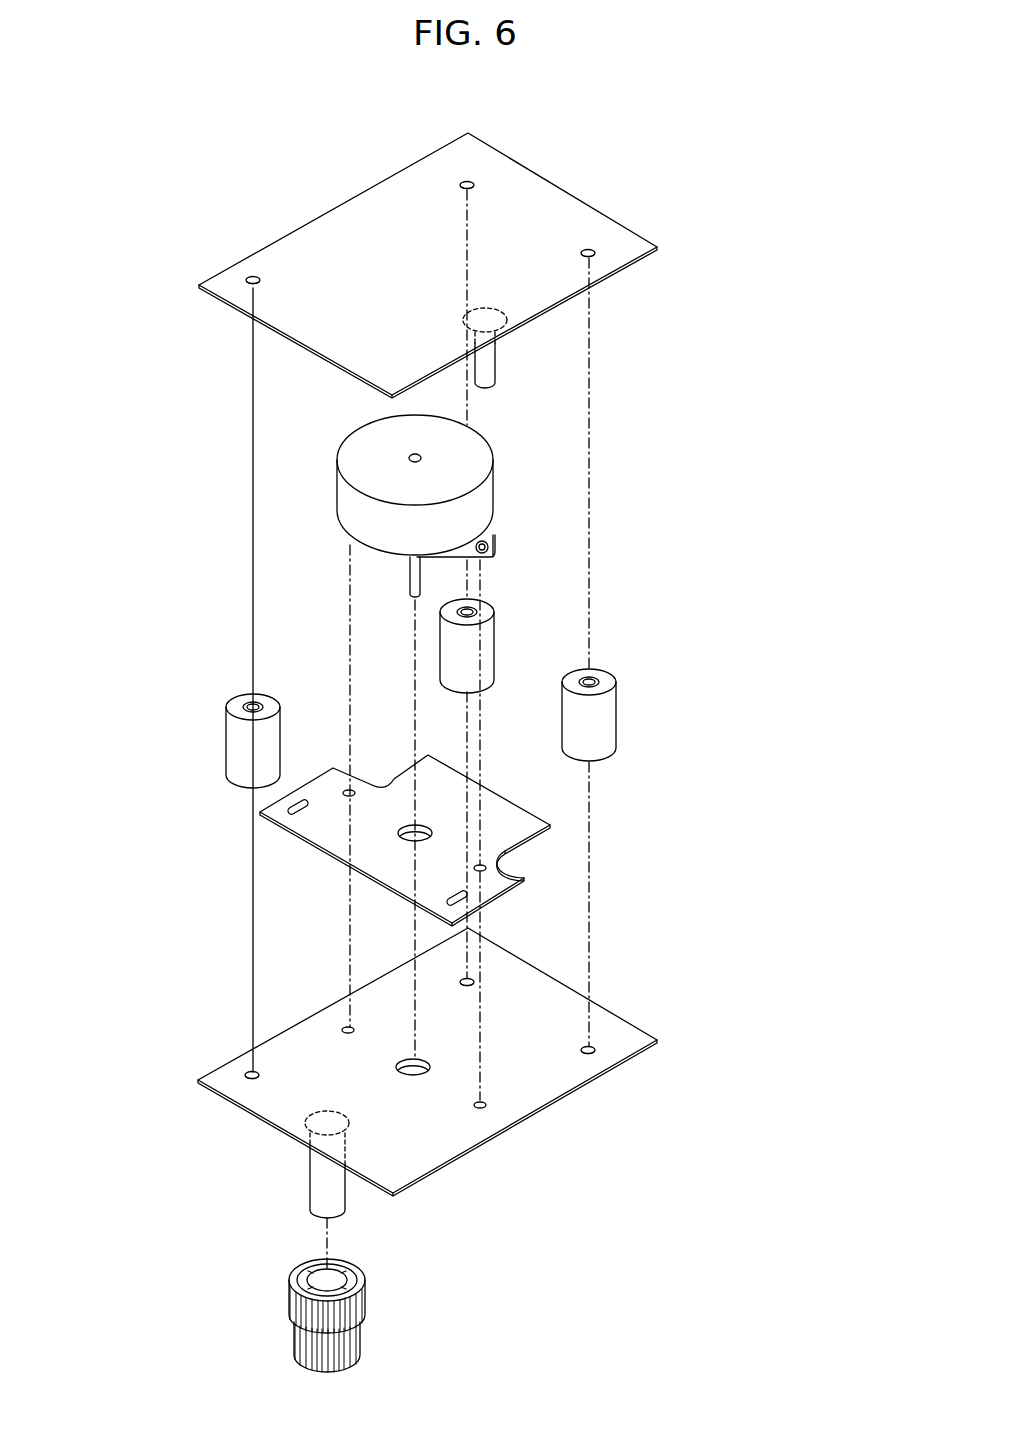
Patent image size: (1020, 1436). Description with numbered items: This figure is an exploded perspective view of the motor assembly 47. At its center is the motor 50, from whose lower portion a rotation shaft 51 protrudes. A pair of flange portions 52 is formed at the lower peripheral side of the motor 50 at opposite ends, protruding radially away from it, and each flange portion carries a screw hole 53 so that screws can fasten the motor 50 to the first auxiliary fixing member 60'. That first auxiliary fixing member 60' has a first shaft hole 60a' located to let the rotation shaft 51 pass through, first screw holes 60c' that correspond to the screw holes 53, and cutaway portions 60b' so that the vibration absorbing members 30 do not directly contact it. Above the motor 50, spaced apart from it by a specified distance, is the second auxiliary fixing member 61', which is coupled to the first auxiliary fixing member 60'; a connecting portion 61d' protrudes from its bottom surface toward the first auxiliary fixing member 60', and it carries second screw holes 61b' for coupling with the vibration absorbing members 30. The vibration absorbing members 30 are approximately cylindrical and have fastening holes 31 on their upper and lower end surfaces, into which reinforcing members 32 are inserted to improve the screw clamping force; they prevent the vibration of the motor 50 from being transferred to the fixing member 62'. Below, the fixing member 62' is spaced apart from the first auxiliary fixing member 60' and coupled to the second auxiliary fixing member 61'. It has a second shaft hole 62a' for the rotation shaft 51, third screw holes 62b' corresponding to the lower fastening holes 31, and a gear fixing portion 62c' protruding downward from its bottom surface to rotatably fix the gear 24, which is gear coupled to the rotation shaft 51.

The motor assembly 47 is at (745, 505).
The second auxiliary fixing member 61' is at (428, 265).
The second screw holes 61b' is at (427, 195).
The connecting portion 61d' is at (521, 348).
The motor 50 is at (500, 464).
The rotation shaft 51 is at (411, 582).
The flange portions 52 is at (496, 552).
The screw holes 53 is at (487, 543).
The vibration absorbing members 30 is at (235, 757).
The fastening holes 31 is at (250, 703).
The reinforcing members 32 is at (242, 705).
The first auxiliary fixing member 60' is at (458, 840).
The first shaft hole 60a' is at (348, 856).
The cutaway portions 60b' is at (372, 747).
The first screw holes 60c' is at (568, 857).
The fixing member 62' is at (427, 1062).
The second shaft hole 62a' is at (475, 1125).
The third screw holes 62b' is at (426, 989).
The gear fixing portion 62c' is at (284, 1164).
The gear 24 is at (363, 1306).